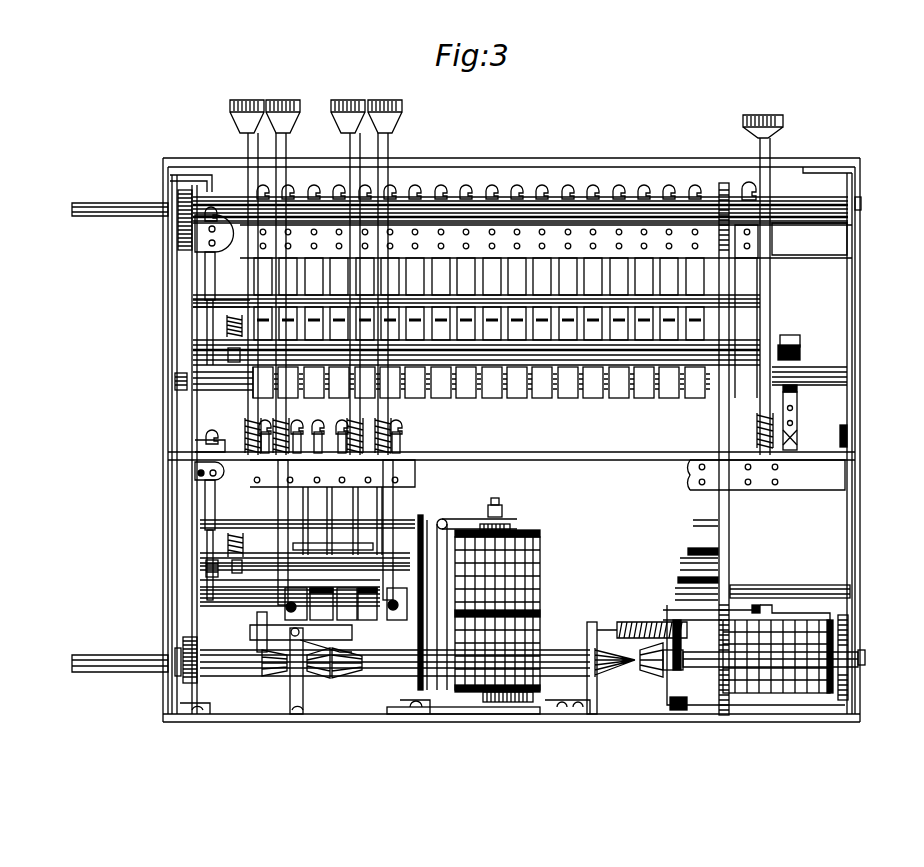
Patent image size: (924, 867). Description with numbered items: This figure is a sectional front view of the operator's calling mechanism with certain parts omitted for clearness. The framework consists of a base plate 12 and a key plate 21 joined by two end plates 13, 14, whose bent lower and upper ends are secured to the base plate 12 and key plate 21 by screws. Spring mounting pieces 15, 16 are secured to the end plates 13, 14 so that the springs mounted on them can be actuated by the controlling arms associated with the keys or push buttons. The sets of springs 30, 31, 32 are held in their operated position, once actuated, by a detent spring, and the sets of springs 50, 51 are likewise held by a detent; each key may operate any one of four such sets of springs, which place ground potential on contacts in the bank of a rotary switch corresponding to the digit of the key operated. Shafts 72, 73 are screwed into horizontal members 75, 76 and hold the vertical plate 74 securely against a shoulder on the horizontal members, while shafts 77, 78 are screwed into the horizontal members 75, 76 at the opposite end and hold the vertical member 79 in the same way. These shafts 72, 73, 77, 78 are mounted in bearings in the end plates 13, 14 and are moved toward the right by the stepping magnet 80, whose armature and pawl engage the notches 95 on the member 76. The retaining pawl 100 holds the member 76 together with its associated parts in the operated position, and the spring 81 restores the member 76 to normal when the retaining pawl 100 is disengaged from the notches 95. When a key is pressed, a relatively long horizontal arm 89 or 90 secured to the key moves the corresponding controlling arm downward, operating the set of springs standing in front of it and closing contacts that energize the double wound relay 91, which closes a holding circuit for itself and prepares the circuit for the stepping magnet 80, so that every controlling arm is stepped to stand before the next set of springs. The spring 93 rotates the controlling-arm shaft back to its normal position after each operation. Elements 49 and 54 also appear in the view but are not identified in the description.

The base plate 12 is at (842, 716).
The end plate 13 is at (165, 422).
The end plate 14 is at (855, 398).
The spring mounting piece 15 is at (830, 236).
The spring mounting piece 16 is at (830, 472).
The key plate 21 is at (441, 160).
The set of springs 30 is at (268, 186).
The set of springs 31 is at (289, 192).
The set of springs 32 is at (315, 192).
The stop hook 49 is at (745, 182).
The set of springs 50 is at (295, 426).
The set of springs 51 is at (318, 427).
The spring-loaded rod 54 is at (392, 437).
The shaft 72 is at (112, 204).
The shaft 73 is at (105, 656).
The vertical plate 74 is at (198, 568).
The horizontal member 75 is at (498, 208).
The horizontal member 76 is at (385, 666).
The shaft 77 is at (858, 204).
The shaft 78 is at (866, 656).
The vertical member 79 is at (730, 558).
The stepping magnet 80 is at (783, 677).
The spring 81 is at (620, 630).
The arm 89 is at (290, 550).
The arm 90 is at (240, 315).
The double wound relay 91 is at (515, 572).
The spring 93 is at (193, 314).
The notches 95 is at (655, 672).
The retaining pawl 100 is at (355, 634).